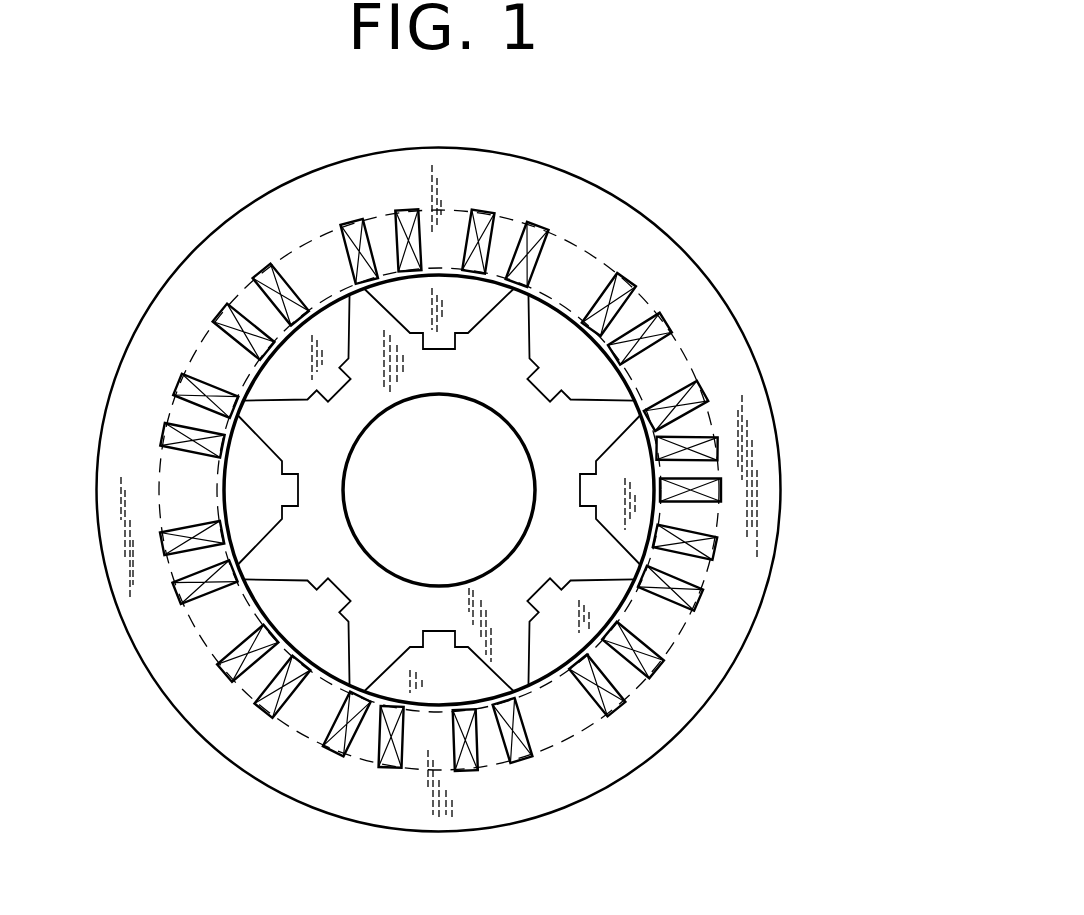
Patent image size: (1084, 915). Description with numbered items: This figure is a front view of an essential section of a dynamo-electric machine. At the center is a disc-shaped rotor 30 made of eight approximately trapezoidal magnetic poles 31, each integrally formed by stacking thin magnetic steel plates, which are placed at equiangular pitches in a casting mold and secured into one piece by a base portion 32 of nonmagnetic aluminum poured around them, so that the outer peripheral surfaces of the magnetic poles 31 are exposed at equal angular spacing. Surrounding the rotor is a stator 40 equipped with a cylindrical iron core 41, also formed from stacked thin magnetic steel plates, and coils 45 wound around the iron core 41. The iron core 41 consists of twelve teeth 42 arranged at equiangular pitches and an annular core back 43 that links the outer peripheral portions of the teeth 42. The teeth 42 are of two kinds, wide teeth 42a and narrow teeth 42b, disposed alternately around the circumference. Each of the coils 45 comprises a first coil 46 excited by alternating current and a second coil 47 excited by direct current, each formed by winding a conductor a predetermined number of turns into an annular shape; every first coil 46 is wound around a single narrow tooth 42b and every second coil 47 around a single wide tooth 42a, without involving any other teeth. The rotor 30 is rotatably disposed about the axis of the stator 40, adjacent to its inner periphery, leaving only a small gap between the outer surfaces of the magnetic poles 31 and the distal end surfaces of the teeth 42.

The rotor 30 is at (435, 438).
The magnetic pole 31 is at (556, 350).
The base portion 32 is at (562, 447).
The stator 40 is at (652, 208).
The iron core 41 is at (692, 253).
The teeth 42 is at (848, 250).
The wide teeth 42a is at (588, 270).
The narrow teeth 42b is at (690, 355).
The core back 43 is at (763, 505).
The coils 45 is at (866, 367).
The first coil 46 is at (712, 390).
The second coil 47 is at (710, 442).